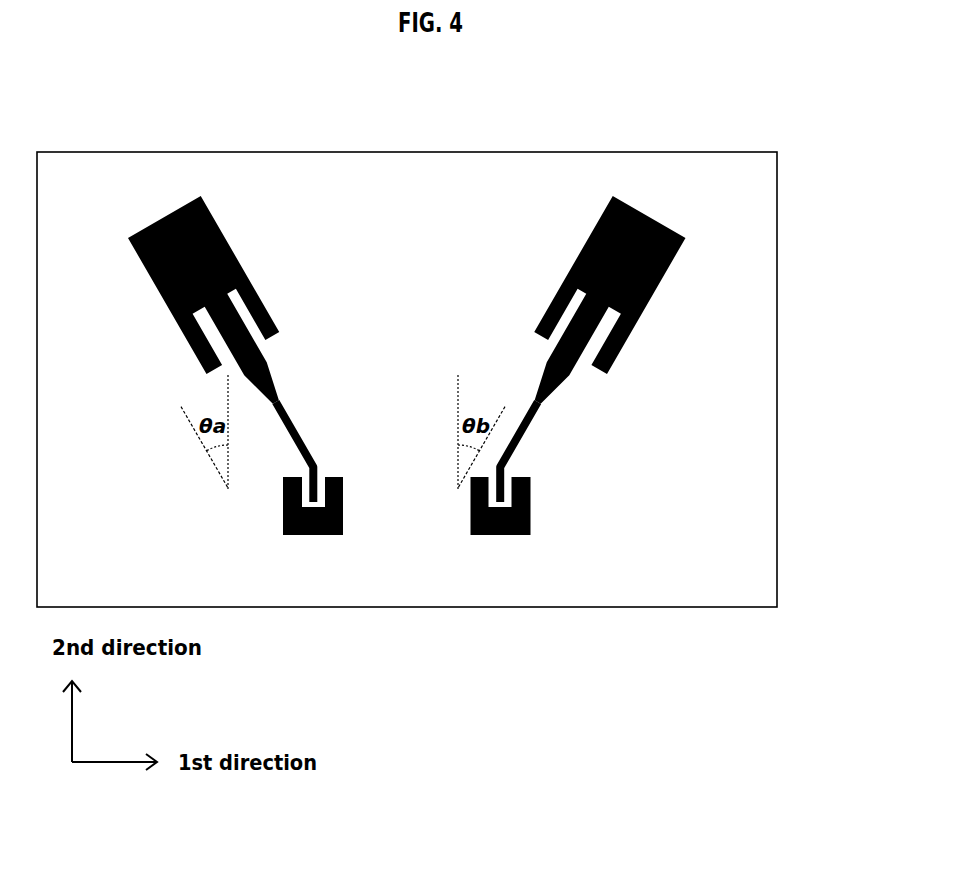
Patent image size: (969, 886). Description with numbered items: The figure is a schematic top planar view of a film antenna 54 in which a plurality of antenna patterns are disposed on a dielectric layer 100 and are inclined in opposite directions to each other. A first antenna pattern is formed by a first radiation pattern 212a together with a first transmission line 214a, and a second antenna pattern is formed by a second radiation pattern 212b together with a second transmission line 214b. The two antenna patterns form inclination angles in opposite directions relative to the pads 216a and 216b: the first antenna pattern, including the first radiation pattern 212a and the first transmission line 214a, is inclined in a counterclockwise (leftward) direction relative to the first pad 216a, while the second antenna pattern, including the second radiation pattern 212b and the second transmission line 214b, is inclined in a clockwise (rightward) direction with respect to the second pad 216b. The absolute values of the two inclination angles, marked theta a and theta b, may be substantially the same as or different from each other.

The film antenna 54 is at (67, 84).
The dielectric layer 100 is at (777, 222).
The first radiation pattern 212a is at (163, 215).
The second radiation pattern 212b is at (650, 217).
The first transmission line 214a is at (300, 443).
The second transmission line 214b is at (535, 436).
The first pad 216a is at (310, 535).
The second pad 216b is at (495, 533).